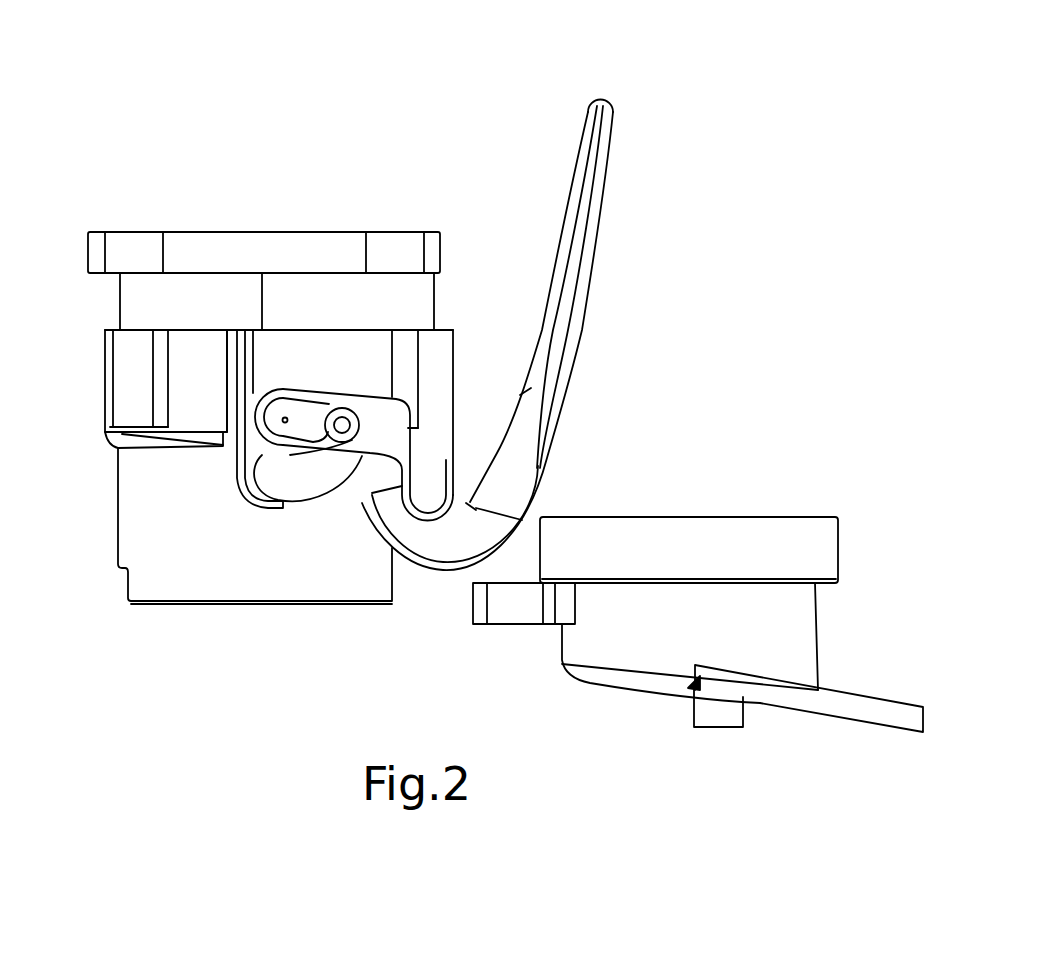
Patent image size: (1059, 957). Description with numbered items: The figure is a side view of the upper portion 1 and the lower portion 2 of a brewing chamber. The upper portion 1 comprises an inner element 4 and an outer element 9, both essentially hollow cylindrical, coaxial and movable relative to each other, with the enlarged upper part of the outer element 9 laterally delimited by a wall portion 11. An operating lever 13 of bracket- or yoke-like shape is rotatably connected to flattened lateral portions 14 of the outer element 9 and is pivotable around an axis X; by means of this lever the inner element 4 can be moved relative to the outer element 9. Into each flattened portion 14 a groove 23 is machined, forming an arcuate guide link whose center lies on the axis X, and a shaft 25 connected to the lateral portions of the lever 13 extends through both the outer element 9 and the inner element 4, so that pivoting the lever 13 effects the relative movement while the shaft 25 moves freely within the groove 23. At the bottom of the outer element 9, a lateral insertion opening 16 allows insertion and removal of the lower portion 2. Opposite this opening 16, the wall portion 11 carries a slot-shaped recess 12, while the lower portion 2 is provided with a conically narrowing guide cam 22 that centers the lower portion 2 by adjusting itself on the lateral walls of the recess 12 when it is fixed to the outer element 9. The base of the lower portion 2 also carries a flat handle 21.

The upper portion of the brewing chamber 1 is at (362, 190).
The lower portion of the brewing chamber 2 is at (690, 486).
The inner element 4 is at (133, 292).
The outer element 9 is at (130, 390).
The wall portion 11 is at (235, 563).
The slot-shaped recess 12 is at (94, 651).
The operating lever 13 is at (598, 199).
The flattened lateral portions 14 is at (368, 353).
The lateral insertion opening 16 is at (425, 526).
The flat handle 21 is at (870, 713).
The guide cam 22 is at (513, 612).
The groove 23 is at (308, 476).
The shaft 25 is at (331, 410).
The axis X is at (286, 416).